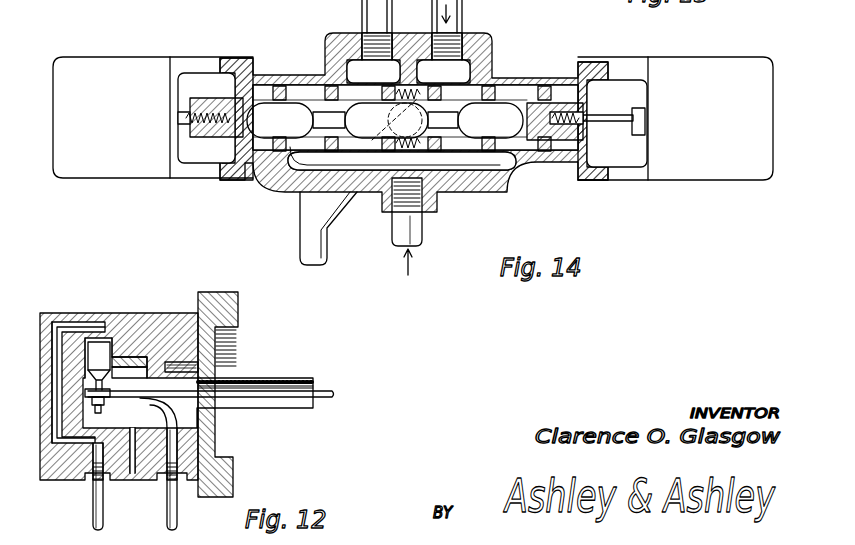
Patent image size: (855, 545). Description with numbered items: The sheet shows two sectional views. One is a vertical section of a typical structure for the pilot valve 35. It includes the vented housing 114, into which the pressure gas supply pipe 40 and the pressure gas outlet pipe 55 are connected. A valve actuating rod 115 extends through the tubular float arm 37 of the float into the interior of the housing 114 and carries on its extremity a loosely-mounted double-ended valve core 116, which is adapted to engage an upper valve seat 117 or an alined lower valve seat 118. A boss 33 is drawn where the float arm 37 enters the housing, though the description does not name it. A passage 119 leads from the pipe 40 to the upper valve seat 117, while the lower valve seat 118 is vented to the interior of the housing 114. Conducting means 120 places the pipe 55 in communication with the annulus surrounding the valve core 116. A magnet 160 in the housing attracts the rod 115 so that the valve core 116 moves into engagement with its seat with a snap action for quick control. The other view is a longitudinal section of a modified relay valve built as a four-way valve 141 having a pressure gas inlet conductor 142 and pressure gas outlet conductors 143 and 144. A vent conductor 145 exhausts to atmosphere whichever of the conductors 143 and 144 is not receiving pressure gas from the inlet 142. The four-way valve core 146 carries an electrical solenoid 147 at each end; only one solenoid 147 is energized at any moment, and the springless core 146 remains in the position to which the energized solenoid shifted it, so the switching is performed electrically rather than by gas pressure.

In FIG. 14, the four-way valve 141 is at (505, 188).
In FIG. 14, the electrical solenoid 147 is at (140, 40).
In FIG. 14, the four-way valve core 146 is at (505, 105).
In FIG. 14, the pressure gas outlet conductor 143 is at (362, 13).
In FIG. 14, the pressure gas outlet conductor 144 is at (462, 12).
In FIG. 14, the vent conductor 145 is at (305, 202).
In FIG. 14, the pressure gas inlet conductor 142 is at (426, 226).
In FIG. 12, the pilot valve 35 is at (168, 320).
In FIG. 12, the boss 33 is at (230, 282).
In FIG. 12, the vented housing 114 is at (58, 320).
In FIG. 12, the passage 119 is at (52, 345).
In FIG. 12, the lower valve seat 118 is at (128, 355).
In FIG. 12, the upper valve seat 117 is at (103, 336).
In FIG. 12, the double-ended valve core 116 is at (88, 342).
In FIG. 12, the magnet 160 is at (122, 411).
In FIG. 12, the valve actuating rod 115 is at (345, 378).
In FIG. 12, the tubular float arm 37 is at (282, 380).
In FIG. 12, the conducting means 120 is at (160, 418).
In FIG. 12, the pressure gas supply pipe 40 is at (93, 506).
In FIG. 12, the pressure gas outlet pipe 55 is at (167, 506).